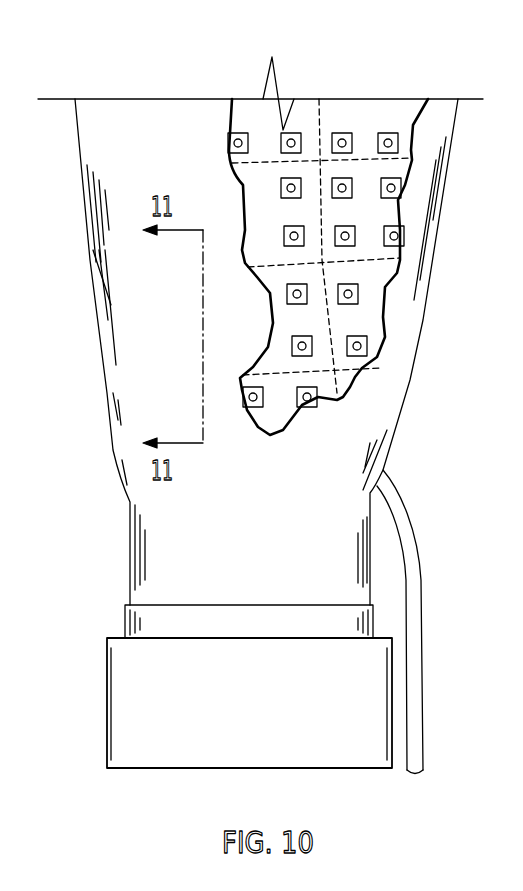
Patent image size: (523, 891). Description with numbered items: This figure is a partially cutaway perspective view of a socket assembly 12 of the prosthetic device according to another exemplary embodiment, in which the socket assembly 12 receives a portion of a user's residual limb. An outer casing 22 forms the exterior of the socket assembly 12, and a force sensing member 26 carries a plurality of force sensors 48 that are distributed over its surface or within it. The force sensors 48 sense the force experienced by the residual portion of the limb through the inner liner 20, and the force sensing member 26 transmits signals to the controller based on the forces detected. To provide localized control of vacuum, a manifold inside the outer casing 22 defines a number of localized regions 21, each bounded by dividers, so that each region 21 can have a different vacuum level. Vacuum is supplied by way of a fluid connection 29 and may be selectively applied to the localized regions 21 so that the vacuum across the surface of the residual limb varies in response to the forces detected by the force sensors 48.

The socket assembly 12 is at (472, 167).
The inner liner 20 is at (392, 112).
The localized regions 21 is at (373, 245).
The outer casing 22 is at (407, 348).
The force sensing member 26 is at (354, 72).
The fluid connection 29 is at (413, 600).
The force sensors 48 is at (340, 142).